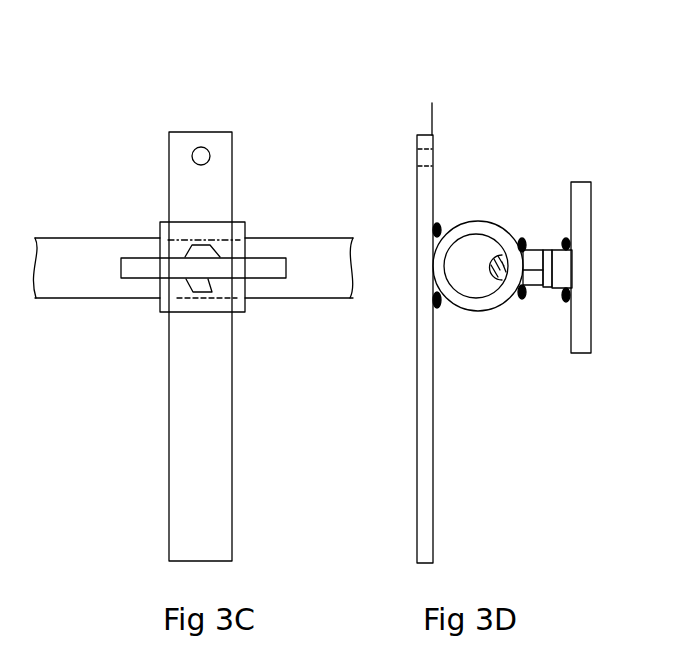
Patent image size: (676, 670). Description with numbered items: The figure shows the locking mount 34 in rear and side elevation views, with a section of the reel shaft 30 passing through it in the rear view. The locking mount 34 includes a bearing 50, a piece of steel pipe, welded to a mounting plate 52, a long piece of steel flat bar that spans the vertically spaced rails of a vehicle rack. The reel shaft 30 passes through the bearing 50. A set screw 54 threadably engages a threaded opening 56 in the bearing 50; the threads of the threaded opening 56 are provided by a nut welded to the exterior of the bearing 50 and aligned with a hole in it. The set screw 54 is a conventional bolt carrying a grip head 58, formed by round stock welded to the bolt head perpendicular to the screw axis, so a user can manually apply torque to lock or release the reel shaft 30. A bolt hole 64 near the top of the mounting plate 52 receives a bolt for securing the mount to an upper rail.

In FIG. 3C, the reel shaft 30 is at (63, 258).
In FIG. 3C, the locking mount 34 is at (257, 211).
In FIG. 3D, the locking mount 34 is at (405, 223).
In FIG. 3C, the bearing 50 is at (173, 302).
In FIG. 3D, the bearing 50 is at (488, 302).
In FIG. 3C, the mounting plate 52 is at (228, 163).
In FIG. 3D, the mounting plate 52 is at (425, 349).
In FIG. 3C, the set screw 54 is at (204, 279).
In FIG. 3D, the set screw 54 is at (562, 281).
In FIG. 3D, the threaded opening 56 is at (528, 265).
In FIG. 3C, the grip head 58 is at (185, 268).
In FIG. 3D, the grip head 58 is at (582, 294).
In FIG. 3C, the bolt hole 64 is at (200, 147).
In FIG. 3D, the bolt hole 64 is at (433, 153).